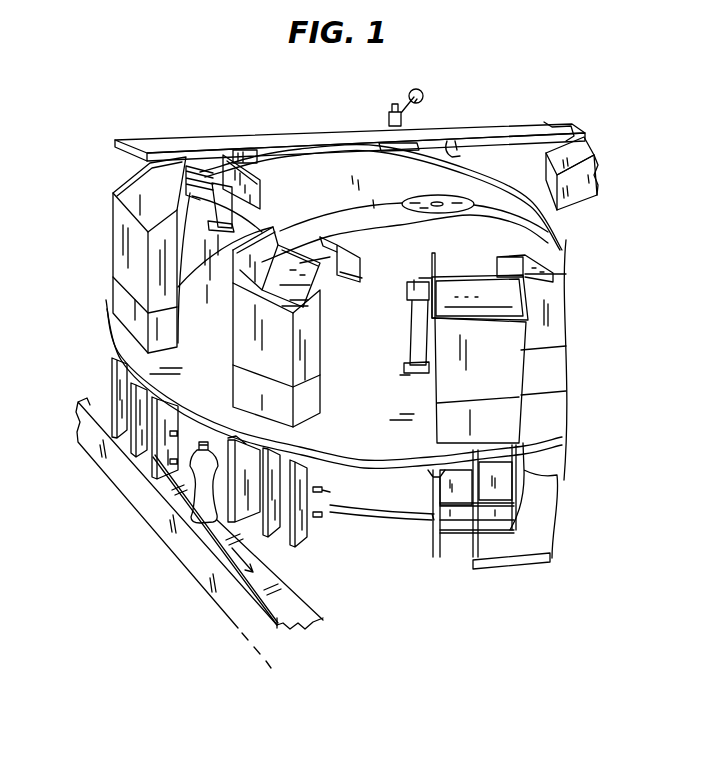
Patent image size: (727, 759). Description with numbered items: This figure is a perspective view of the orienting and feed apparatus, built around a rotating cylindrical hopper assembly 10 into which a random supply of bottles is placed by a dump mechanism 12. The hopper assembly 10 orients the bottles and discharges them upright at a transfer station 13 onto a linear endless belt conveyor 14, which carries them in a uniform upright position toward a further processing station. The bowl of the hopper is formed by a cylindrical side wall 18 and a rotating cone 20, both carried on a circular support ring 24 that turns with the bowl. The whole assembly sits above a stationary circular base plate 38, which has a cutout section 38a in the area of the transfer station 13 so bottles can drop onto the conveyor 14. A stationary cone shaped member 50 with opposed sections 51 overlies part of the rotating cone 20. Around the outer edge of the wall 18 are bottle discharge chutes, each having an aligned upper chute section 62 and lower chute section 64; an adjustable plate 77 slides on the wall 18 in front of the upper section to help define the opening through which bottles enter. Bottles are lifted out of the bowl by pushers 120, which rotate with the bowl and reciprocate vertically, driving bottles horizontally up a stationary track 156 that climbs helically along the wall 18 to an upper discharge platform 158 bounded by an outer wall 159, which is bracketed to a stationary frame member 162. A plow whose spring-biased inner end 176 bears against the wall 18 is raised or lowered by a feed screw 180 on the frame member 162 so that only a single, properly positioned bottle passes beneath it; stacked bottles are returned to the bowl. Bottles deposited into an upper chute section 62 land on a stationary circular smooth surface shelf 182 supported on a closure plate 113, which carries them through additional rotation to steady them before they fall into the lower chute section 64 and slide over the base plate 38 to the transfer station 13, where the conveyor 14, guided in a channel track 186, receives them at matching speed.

The rotating cylindrical hopper assembly 10 is at (615, 199).
The dump mechanism 12 is at (583, 158).
The transfer station 13 is at (88, 491).
The linear endless belt conveyor 14 is at (257, 586).
The cylindrical side wall 18 is at (334, 201).
The cone 20 is at (482, 262).
The circular support ring 24 is at (345, 352).
The stationary circular base plate 38 is at (487, 567).
The cutout section 38a is at (367, 512).
The stationary cone shaped member 50 is at (530, 202).
The opposed sections 51 is at (406, 210).
The upper chute section 62 is at (110, 257).
The lower chute section 64 is at (110, 402).
The adjustable plate 77 is at (352, 250).
The closure plate 113 is at (545, 512).
The pusher 120 is at (212, 158).
The stationary track 156 is at (367, 186).
The upper discharge platform 158 is at (246, 207).
The outer wall 159 is at (263, 187).
The stationary frame member 162 is at (282, 135).
The inner end of plow 176 is at (458, 151).
The feed screw 180 is at (411, 118).
The stationary circular smooth surface shelf 182 is at (356, 406).
The channel track 186 is at (178, 543).